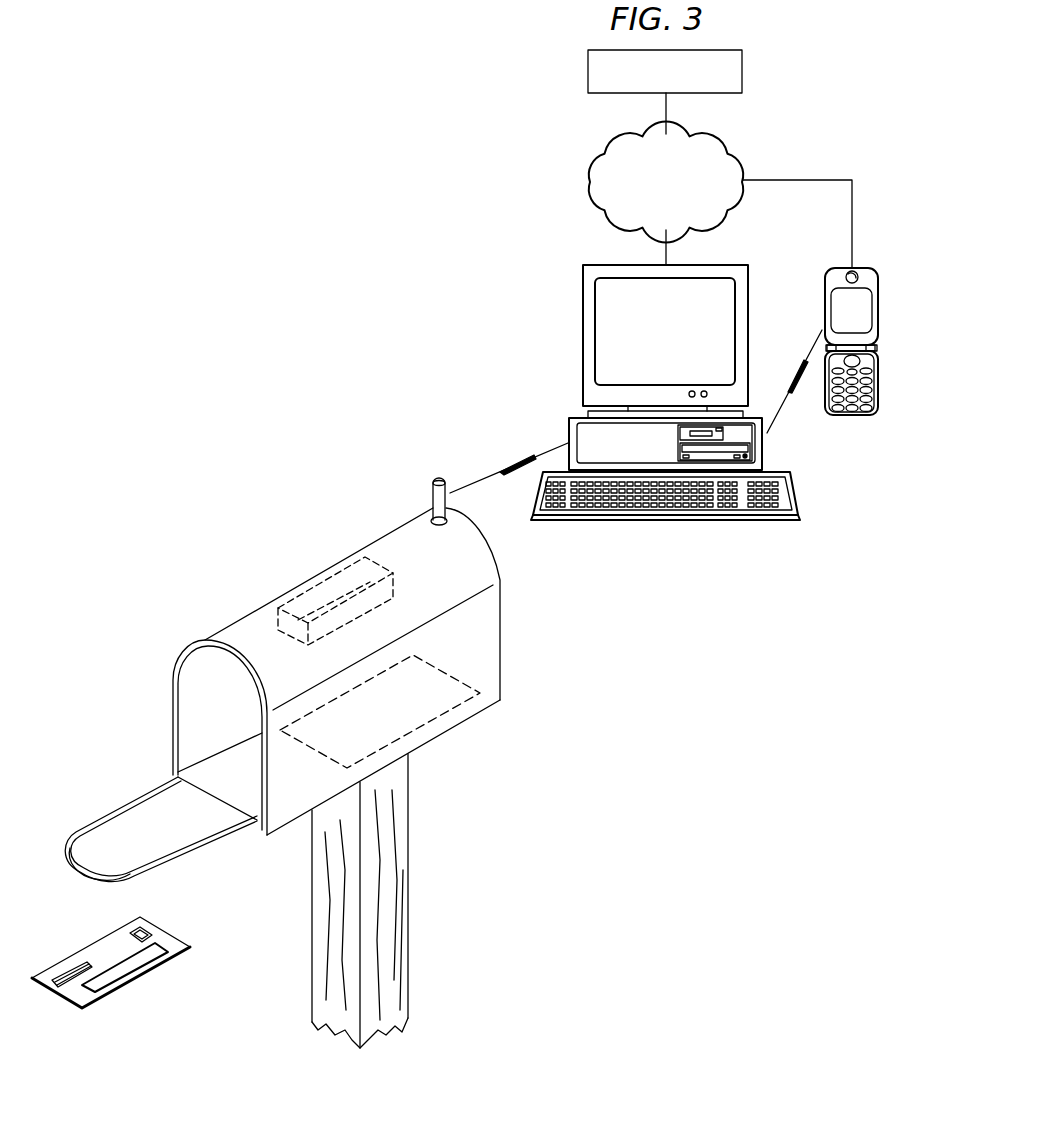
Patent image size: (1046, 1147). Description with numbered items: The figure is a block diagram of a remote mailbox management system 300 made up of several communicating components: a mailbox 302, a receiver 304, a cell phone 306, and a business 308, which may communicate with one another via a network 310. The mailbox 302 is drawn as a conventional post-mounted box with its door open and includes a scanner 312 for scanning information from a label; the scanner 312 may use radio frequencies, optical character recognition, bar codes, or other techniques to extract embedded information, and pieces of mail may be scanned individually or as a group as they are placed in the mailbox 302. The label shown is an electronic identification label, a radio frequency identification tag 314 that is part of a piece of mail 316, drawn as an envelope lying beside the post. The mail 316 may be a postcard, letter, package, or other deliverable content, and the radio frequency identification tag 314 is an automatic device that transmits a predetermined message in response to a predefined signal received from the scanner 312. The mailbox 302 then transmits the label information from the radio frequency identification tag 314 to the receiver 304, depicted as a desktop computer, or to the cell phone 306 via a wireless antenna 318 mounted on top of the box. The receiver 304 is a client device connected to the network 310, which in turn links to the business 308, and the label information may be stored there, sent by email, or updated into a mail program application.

The remote mailbox management system 300 is at (264, 372).
The mailbox 302 is at (166, 704).
The receiver 304 is at (686, 352).
The cell phone 306 is at (850, 415).
The business 308 is at (743, 72).
The network 310 is at (728, 148).
The scanner 312 is at (317, 583).
The radio frequency identification tag 314 is at (163, 947).
The mail 316 is at (64, 1006).
The wireless antenna 318 is at (428, 496).